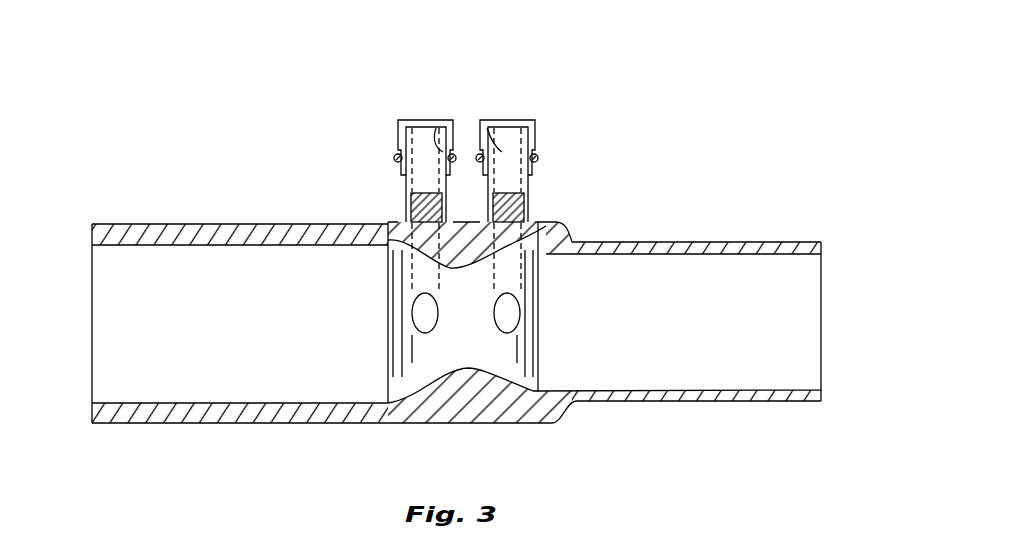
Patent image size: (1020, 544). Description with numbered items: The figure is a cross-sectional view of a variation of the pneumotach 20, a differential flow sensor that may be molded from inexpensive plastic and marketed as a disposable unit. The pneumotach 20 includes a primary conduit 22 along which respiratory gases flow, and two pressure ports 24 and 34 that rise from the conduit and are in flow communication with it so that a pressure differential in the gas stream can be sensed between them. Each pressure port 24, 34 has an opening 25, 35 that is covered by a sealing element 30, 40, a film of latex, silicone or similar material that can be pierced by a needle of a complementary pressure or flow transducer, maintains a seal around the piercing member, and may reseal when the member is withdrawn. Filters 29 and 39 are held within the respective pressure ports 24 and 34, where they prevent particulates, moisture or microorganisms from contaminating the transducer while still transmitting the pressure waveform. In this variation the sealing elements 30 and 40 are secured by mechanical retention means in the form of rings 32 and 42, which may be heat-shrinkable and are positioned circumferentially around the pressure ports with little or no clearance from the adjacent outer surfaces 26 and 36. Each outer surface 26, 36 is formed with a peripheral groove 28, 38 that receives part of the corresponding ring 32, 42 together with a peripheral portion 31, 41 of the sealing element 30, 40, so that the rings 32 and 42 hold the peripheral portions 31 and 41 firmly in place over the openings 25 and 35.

The pneumotach 20 is at (131, 163).
The primary conduit 22 is at (238, 330).
The pressure port 24 is at (510, 175).
The opening 25 is at (508, 118).
The outer surface 26 is at (530, 198).
The peripheral groove 28 is at (487, 128).
The filter 29 is at (552, 250).
The sealing element 30 is at (518, 124).
The peripheral portion 31 is at (540, 172).
The ring 32 is at (538, 158).
The pressure port 34 is at (409, 188).
The opening 35 is at (427, 118).
The outer surface 36 is at (404, 180).
The peripheral groove 38 is at (436, 128).
The filter 39 is at (392, 228).
The sealing element 40 is at (412, 122).
The peripheral portion 41 is at (400, 170).
The ring 42 is at (394, 156).